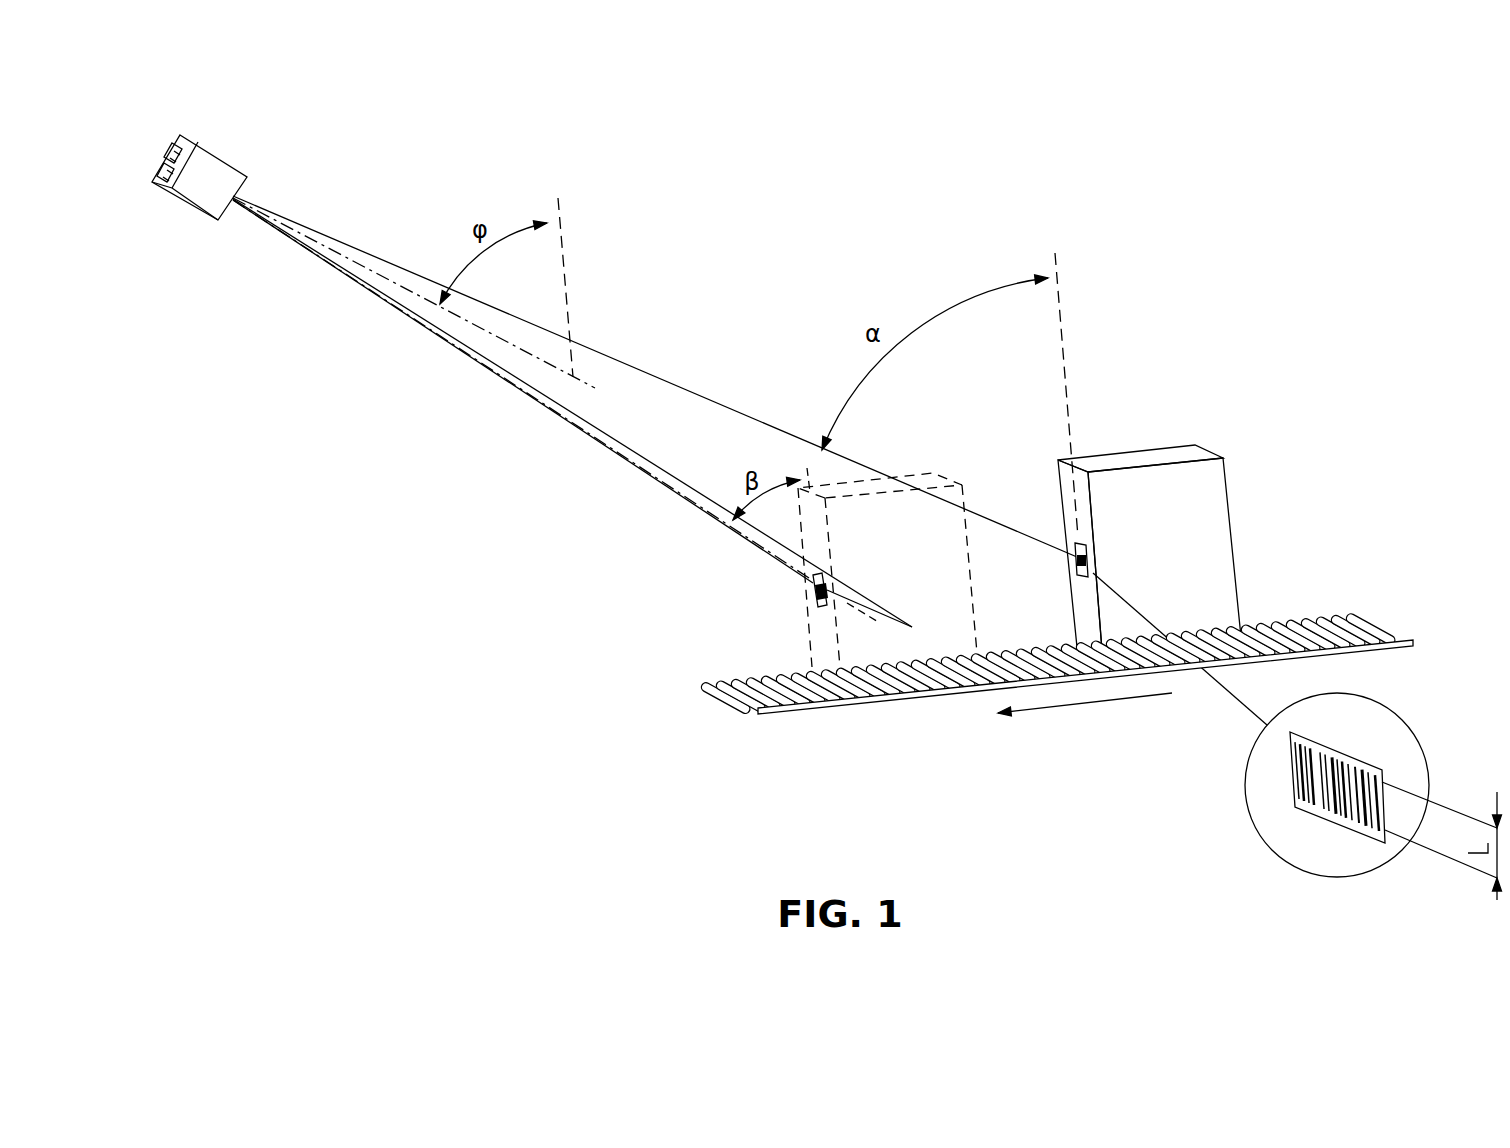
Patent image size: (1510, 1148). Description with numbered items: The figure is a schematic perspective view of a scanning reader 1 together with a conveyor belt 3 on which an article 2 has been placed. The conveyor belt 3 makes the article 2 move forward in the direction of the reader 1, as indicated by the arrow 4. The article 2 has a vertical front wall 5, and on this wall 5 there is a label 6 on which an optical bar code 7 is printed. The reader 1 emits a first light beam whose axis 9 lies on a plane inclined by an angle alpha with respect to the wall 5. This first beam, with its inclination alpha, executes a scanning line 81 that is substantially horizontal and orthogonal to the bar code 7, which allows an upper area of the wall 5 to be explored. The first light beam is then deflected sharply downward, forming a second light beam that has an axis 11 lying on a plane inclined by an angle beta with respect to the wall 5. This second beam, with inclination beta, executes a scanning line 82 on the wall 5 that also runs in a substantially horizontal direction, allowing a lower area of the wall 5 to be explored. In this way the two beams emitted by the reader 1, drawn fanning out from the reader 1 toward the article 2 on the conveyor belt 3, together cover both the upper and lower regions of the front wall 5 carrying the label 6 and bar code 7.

The scanning reader 1 is at (192, 217).
The article 2 is at (902, 473).
The conveyor belt 3 is at (1415, 638).
The arrow 4 is at (1087, 710).
The vertical front wall 5 is at (1067, 478).
The label 6 is at (817, 607).
The optical bar code 7 is at (1087, 552).
The axis 9 is at (610, 358).
The axis 11 is at (650, 478).
The scanning line 81 is at (1090, 568).
The scanning line 82 is at (793, 577).